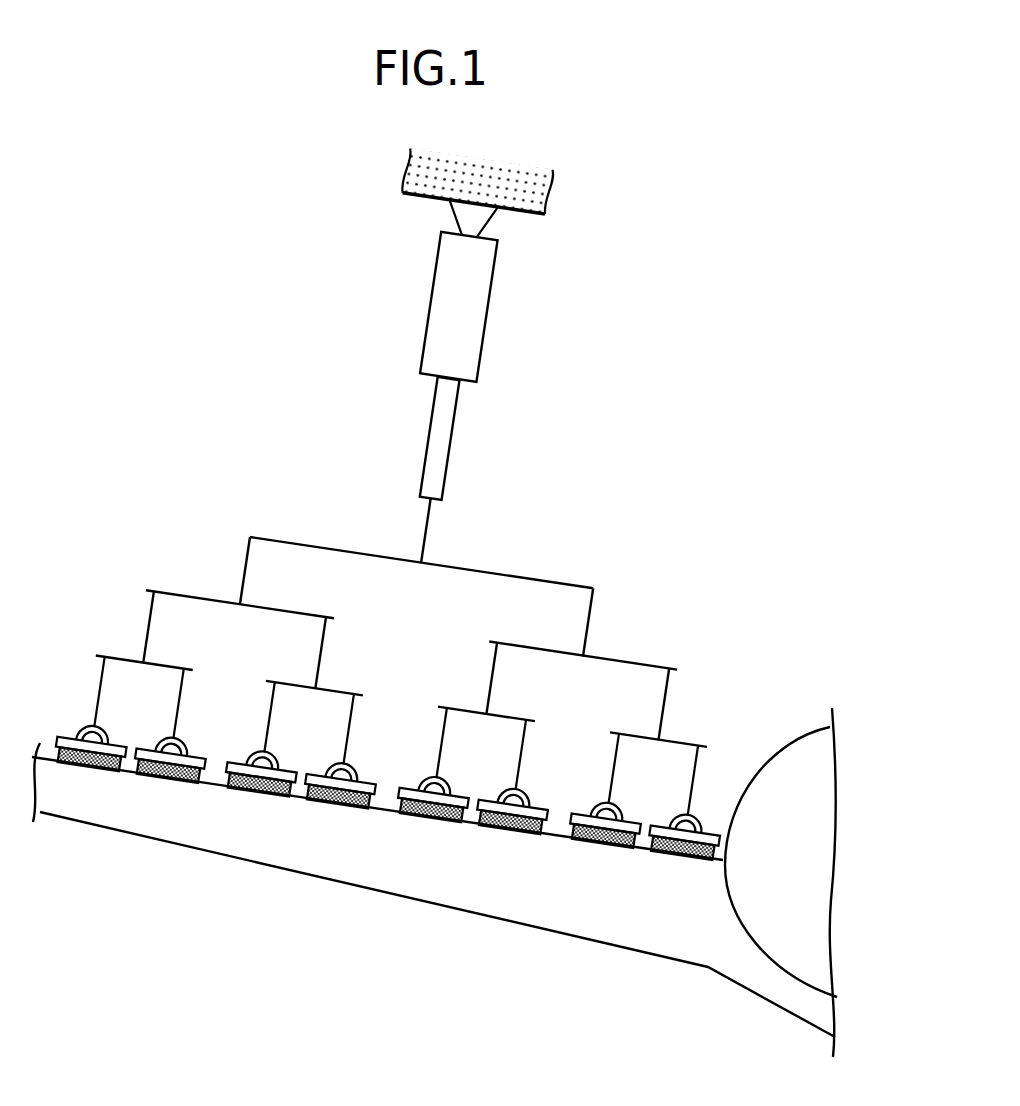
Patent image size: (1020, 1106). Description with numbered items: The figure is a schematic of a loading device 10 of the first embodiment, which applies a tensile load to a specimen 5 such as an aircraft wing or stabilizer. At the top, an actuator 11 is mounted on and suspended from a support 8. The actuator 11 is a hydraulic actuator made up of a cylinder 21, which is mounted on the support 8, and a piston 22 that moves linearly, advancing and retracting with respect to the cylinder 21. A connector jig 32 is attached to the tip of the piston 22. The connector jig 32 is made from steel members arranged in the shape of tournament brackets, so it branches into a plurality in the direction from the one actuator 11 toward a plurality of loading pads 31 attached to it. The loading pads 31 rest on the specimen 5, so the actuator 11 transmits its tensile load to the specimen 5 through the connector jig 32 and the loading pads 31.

The specimen 5 is at (387, 897).
The support 8 is at (523, 215).
The loading device 10 is at (560, 447).
The actuator 11 is at (468, 398).
The cylinder 21 is at (445, 311).
The piston 22 is at (440, 442).
The loading pad 31 is at (143, 740).
The connector jig 32 is at (540, 575).